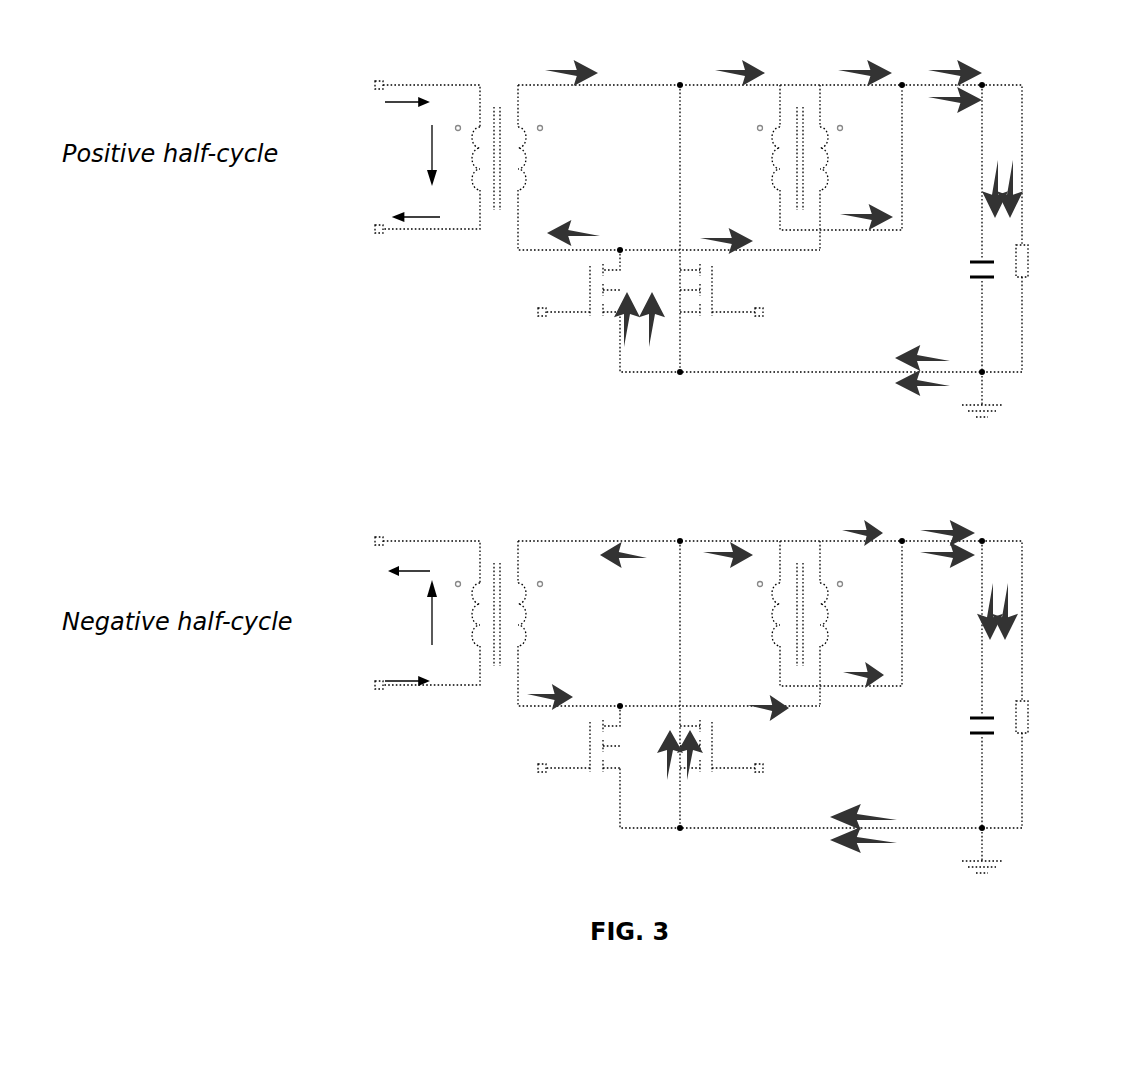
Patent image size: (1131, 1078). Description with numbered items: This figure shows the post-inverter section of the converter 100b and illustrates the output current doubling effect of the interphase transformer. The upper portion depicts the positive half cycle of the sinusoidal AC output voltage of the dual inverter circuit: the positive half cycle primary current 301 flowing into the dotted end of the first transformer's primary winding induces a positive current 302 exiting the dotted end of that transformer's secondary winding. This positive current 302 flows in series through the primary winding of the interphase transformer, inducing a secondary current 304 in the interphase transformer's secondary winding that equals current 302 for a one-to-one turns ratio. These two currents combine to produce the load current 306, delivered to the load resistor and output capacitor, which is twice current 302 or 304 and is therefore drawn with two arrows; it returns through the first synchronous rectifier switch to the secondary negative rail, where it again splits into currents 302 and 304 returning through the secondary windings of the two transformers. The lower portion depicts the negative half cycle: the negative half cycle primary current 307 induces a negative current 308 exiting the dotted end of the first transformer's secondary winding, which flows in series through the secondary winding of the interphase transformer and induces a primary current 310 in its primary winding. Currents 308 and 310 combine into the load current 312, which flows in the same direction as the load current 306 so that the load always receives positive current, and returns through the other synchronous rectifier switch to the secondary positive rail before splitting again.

The converter 100b is at (497, 384).
The positive half cycle primary current 301 is at (415, 172).
The positive current 302 is at (572, 65).
The secondary current 304 is at (880, 65).
The load current 306 is at (983, 68).
The negative half cycle primary current 307 is at (427, 605).
The negative current 308 is at (626, 540).
The primary current 310 is at (742, 540).
The load current 312 is at (945, 523).